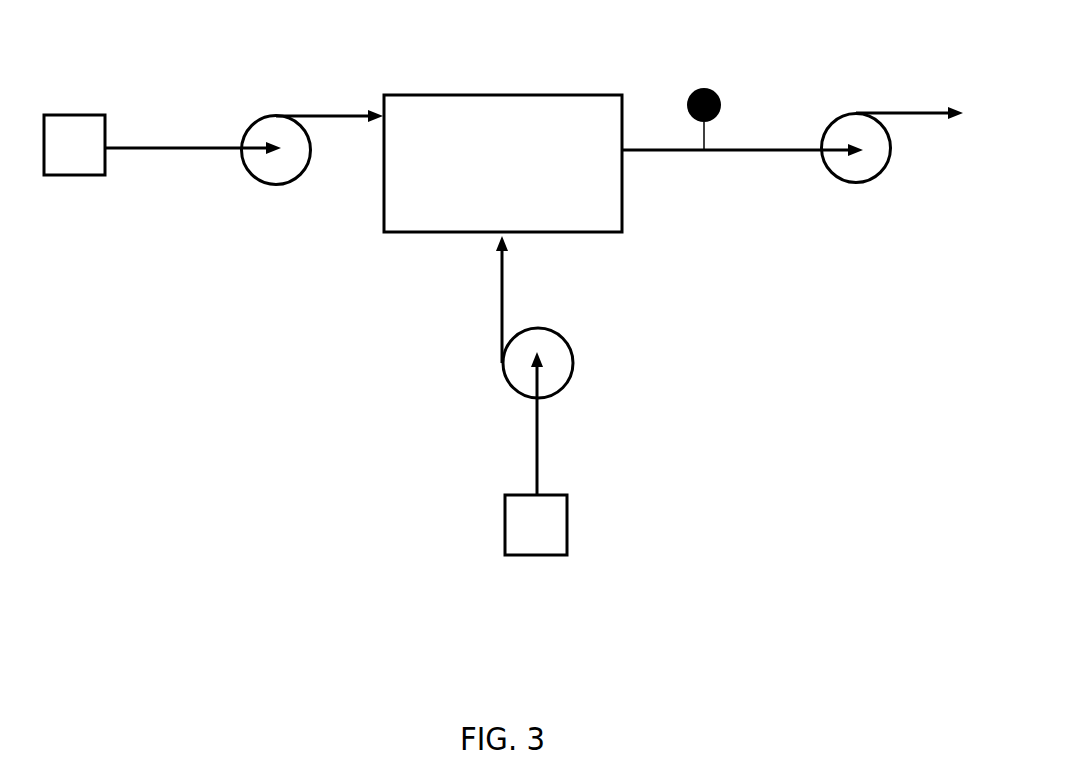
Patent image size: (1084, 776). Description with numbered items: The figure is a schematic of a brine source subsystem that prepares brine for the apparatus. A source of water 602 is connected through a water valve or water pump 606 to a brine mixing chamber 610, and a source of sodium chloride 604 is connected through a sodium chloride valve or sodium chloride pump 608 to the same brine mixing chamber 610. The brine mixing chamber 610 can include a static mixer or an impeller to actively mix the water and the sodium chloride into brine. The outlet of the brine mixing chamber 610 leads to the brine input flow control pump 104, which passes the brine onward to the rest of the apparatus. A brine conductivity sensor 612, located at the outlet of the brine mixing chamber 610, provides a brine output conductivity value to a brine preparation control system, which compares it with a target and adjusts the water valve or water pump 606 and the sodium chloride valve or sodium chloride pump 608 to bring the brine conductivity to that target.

The source of water 602 is at (74, 165).
The source of sodium chloride 604 is at (562, 453).
The water valve or water pump 606 is at (313, 168).
The sodium chloride valve or sodium chloride pump 608 is at (559, 317).
The brine mixing chamber 610 is at (425, 88).
The brine conductivity sensor 612 is at (725, 119).
The brine input flow control pump 104 is at (893, 161).